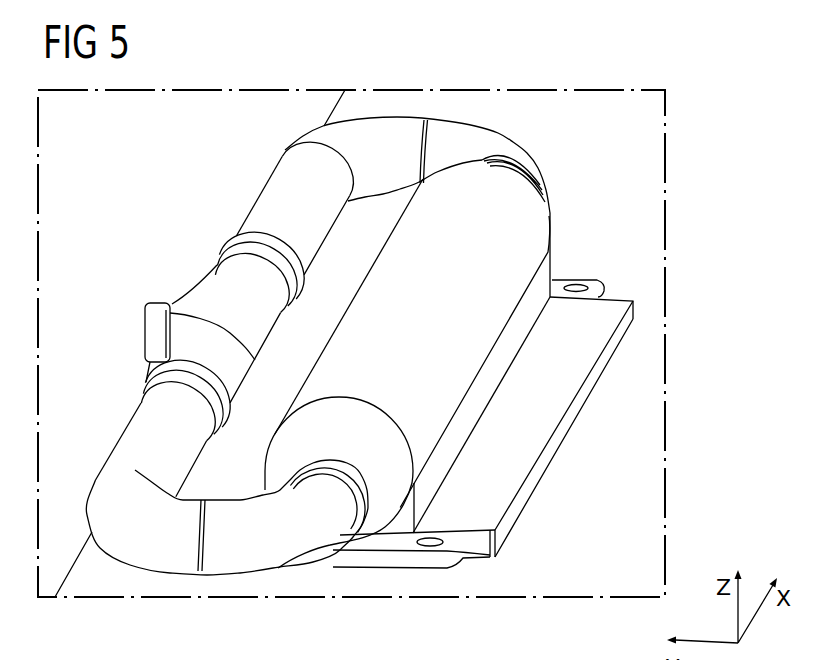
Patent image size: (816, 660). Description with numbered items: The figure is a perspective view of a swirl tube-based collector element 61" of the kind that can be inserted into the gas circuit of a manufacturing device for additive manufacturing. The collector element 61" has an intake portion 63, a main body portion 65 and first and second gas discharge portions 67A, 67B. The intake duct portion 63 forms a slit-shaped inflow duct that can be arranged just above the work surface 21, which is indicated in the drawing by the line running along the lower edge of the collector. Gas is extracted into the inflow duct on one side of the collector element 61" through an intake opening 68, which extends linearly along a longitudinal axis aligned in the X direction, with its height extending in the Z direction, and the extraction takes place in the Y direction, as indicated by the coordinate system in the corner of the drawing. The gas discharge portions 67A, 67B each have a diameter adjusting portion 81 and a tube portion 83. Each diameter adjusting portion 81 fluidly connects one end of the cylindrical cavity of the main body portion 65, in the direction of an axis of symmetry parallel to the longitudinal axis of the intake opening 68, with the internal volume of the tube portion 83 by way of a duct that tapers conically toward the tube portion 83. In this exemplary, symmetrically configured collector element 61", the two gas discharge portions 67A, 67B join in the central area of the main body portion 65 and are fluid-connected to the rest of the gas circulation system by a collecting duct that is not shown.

The collector element 61 is at (152, 177).
The work surface 21 is at (97, 573).
The main body portion 65 is at (550, 219).
The first gas discharge portion 67A is at (277, 572).
The second gas discharge portion 67B is at (521, 145).
The intake opening 68 is at (576, 426).
The intake portion 63 is at (486, 439).
The diameter adjusting portion 81 is at (393, 497).
The tube portion 83 is at (320, 547).